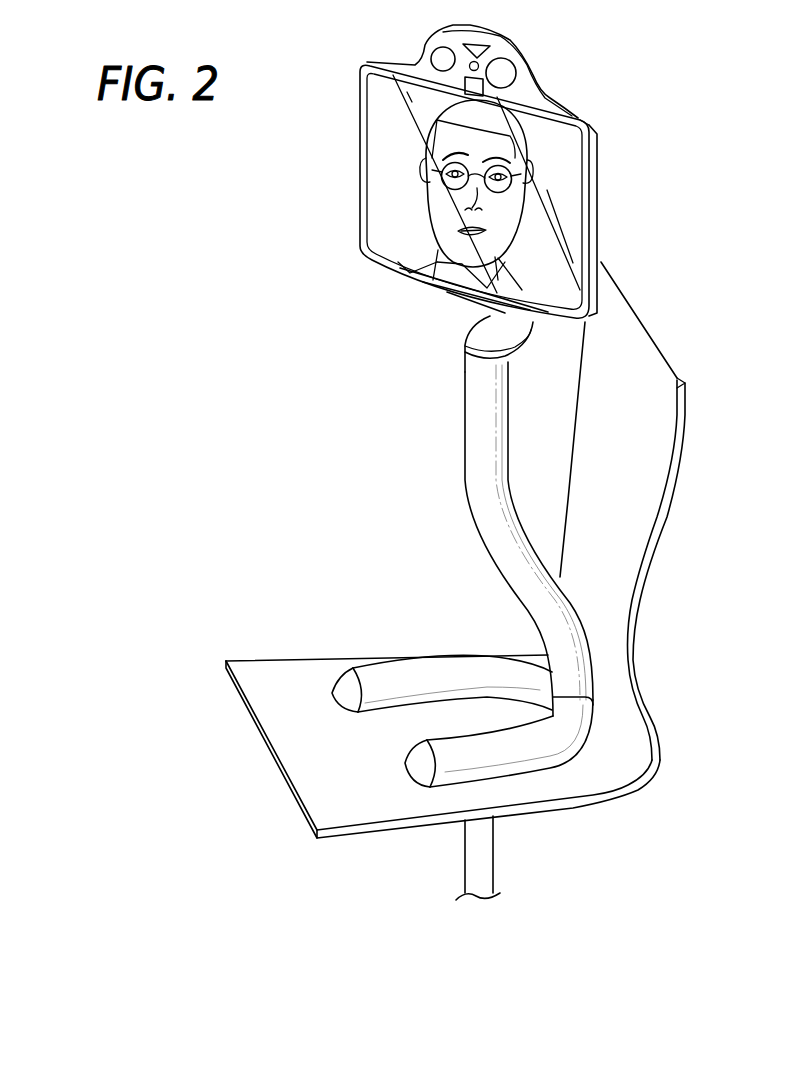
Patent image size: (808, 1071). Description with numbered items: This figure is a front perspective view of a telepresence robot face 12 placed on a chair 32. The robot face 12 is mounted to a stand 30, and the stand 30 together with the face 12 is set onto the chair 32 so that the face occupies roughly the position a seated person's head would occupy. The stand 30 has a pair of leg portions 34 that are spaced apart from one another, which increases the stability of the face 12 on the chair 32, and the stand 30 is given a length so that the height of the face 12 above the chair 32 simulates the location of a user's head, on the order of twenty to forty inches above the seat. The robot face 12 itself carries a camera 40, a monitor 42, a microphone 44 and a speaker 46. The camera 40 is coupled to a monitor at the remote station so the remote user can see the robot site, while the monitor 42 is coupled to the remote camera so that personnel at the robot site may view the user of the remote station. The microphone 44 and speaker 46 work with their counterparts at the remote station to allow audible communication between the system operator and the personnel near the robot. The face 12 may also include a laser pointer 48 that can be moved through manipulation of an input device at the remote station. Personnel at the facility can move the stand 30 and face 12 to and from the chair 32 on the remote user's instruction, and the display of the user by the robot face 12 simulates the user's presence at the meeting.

The robot face 12 is at (563, 192).
The stand 30 is at (475, 520).
The chair 32 is at (602, 764).
The leg portions 34 is at (443, 757).
The camera 40 is at (440, 55).
The monitor 42 is at (390, 152).
The microphone 44 is at (475, 50).
The speaker 46 is at (441, 287).
The laser pointer 48 is at (478, 92).